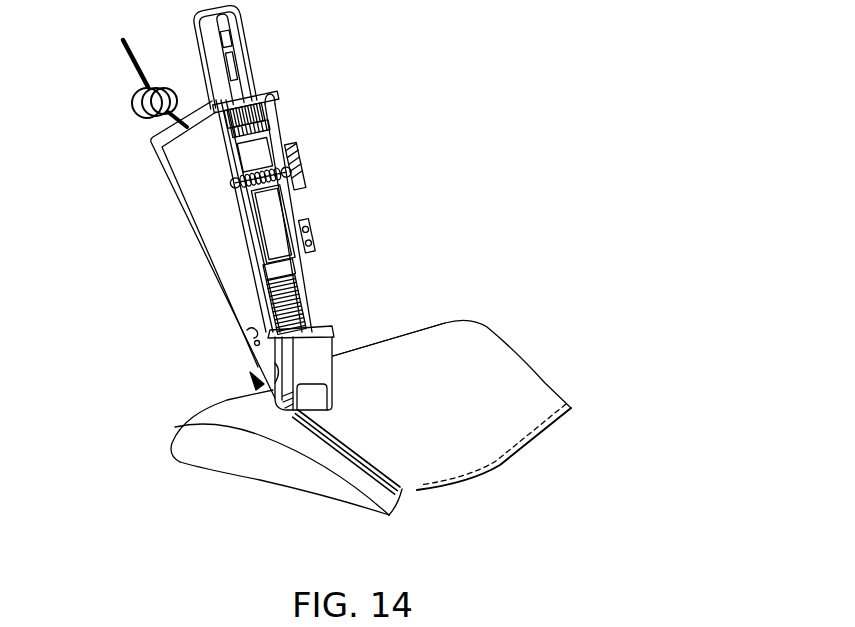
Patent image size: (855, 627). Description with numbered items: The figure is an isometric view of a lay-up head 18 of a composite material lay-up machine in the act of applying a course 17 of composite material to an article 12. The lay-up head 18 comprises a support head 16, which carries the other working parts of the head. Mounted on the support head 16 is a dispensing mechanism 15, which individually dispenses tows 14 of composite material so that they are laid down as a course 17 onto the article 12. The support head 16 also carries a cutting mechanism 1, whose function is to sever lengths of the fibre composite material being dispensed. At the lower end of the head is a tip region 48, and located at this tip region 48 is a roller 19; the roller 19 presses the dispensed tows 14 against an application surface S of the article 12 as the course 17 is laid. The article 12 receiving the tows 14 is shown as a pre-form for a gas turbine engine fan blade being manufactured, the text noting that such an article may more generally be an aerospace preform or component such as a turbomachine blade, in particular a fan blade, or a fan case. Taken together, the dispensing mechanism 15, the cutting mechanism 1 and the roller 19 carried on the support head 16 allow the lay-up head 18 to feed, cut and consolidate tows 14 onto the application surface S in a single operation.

The cutting mechanism 1 is at (357, 335).
The article 12 is at (522, 400).
The tows 14 is at (137, 77).
The dispensing mechanism 15 is at (327, 147).
The support head 16 is at (227, 264).
The course 17 is at (425, 520).
The lay-up head 18 is at (340, 237).
The roller 19 is at (312, 402).
The tip region 48 is at (211, 368).
The application surface S is at (463, 376).